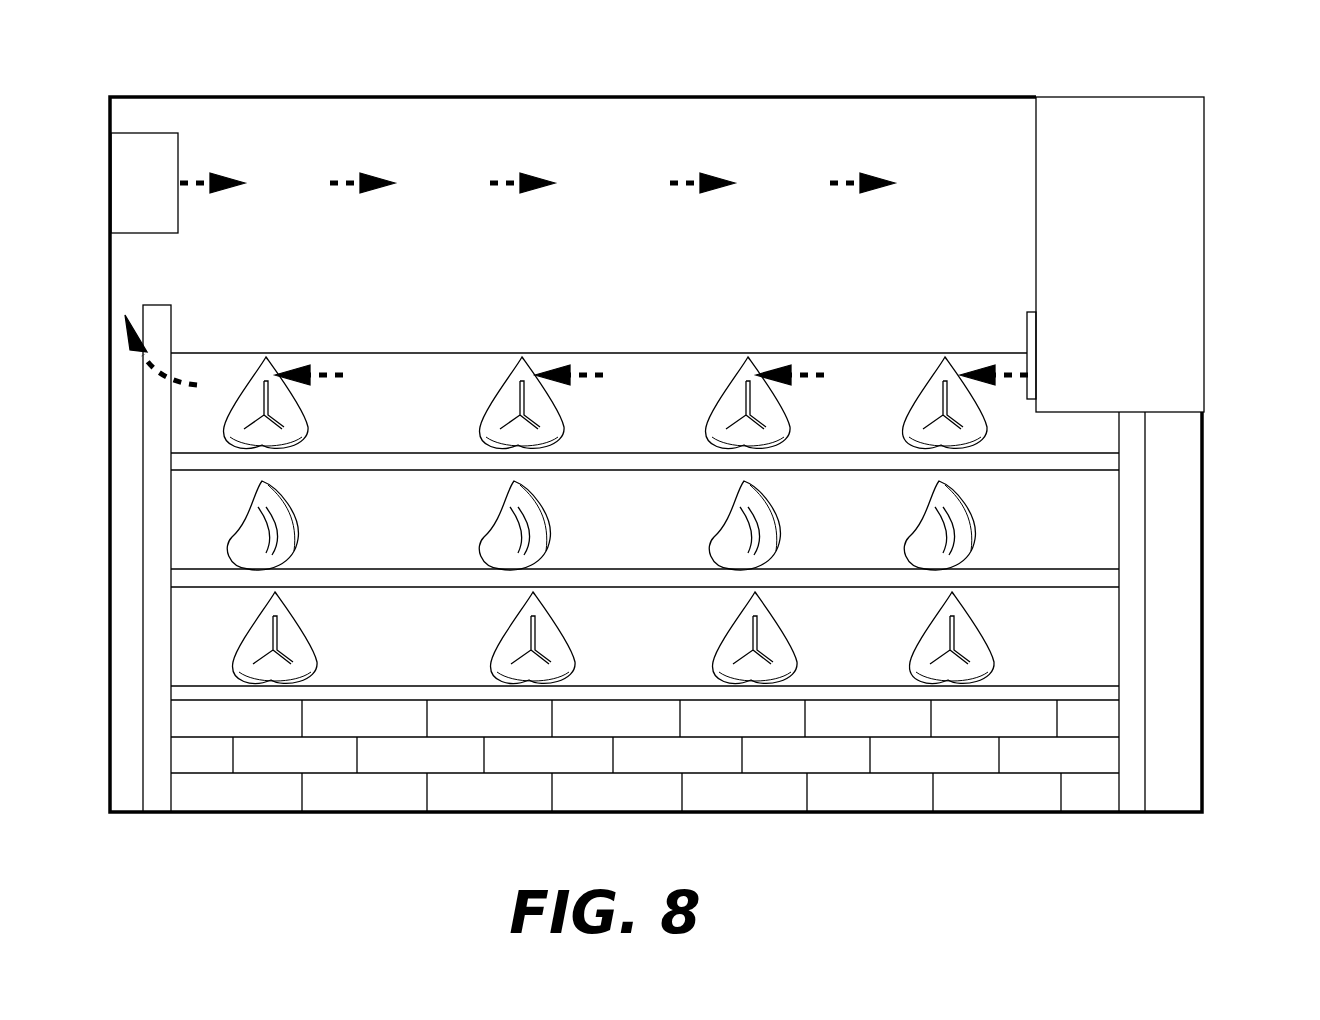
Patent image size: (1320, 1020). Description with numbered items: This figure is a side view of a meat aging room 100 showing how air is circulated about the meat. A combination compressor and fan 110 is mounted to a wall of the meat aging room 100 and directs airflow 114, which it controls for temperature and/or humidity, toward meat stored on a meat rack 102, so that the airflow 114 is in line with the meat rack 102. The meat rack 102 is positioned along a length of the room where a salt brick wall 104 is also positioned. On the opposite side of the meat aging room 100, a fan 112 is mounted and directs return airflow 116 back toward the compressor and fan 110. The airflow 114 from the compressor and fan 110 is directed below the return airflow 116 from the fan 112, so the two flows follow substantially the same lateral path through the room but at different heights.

The meat aging room 100 is at (1262, 118).
The meat rack 102 is at (1119, 577).
The salt brick wall 104 is at (645, 756).
The compressor and fan 110 is at (1115, 254).
The fan 112 is at (144, 183).
The airflow 114 is at (990, 377).
The return airflow 116 is at (225, 183).